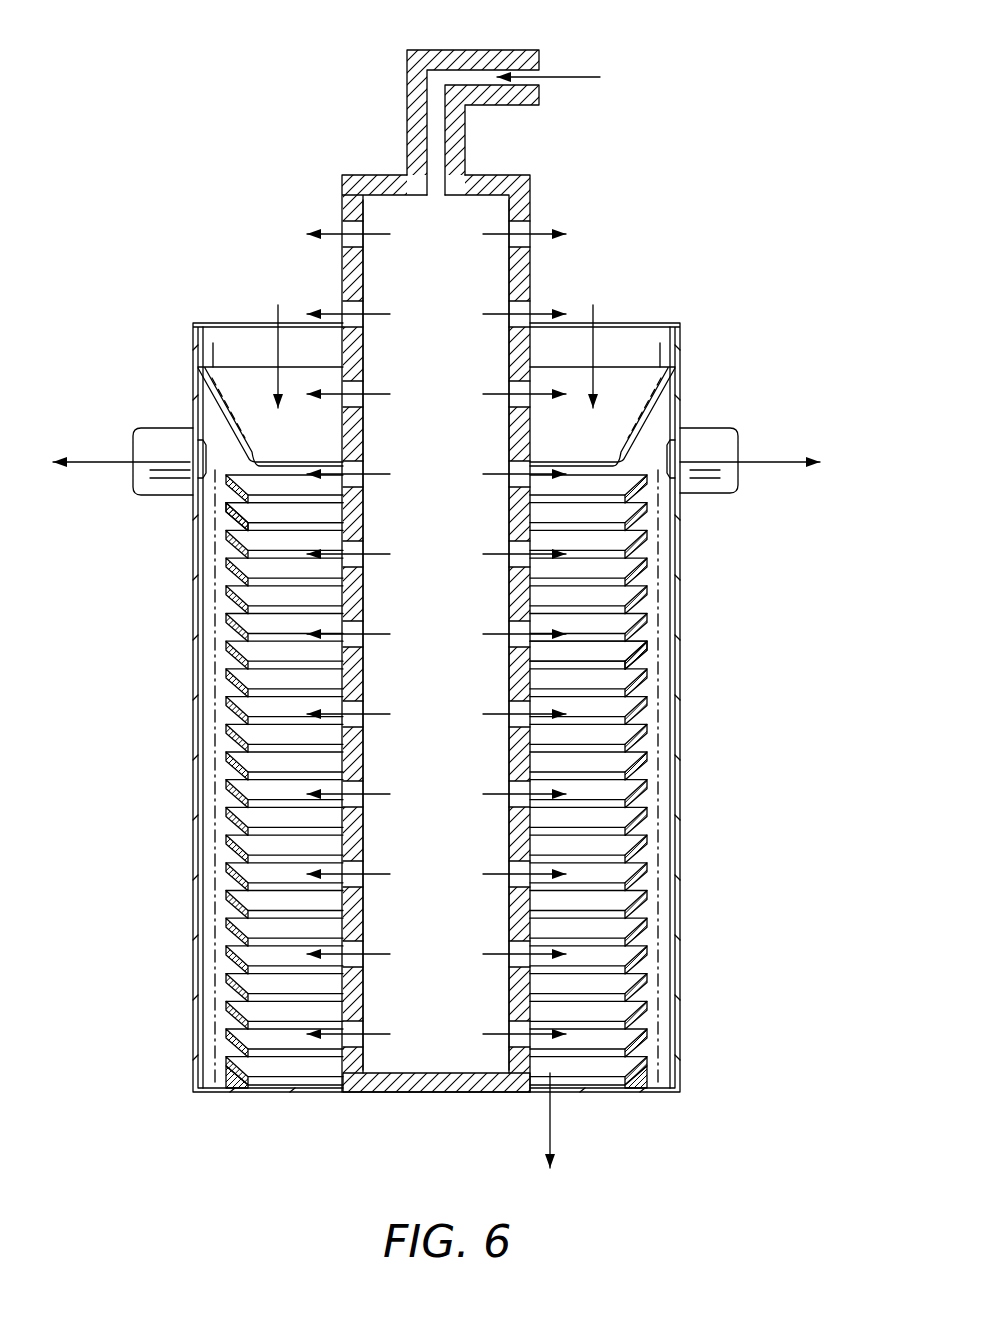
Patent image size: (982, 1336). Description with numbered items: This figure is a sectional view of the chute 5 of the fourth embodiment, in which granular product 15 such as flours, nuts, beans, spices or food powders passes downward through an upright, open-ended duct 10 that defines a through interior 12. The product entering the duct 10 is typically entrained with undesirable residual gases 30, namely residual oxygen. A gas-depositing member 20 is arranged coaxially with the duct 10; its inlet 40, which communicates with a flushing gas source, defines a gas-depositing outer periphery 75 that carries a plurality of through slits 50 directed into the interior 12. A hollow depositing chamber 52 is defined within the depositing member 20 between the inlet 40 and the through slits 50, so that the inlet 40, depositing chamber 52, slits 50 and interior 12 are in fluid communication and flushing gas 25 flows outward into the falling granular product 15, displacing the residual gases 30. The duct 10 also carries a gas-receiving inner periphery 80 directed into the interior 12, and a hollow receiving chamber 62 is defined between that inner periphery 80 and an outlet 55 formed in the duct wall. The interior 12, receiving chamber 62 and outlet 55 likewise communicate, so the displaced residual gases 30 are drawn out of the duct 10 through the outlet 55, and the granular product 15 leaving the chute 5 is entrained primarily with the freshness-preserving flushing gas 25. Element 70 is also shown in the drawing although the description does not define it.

The chute 5 is at (752, 183).
The duct 10 is at (193, 735).
The interior 12 is at (242, 392).
The granular product 15 is at (278, 308).
The gas-depositing member 20 is at (372, 175).
The flushing gas 25 is at (565, 77).
The residual gases 30 is at (112, 462).
The inlet 40 is at (480, 50).
The through slits 50 is at (340, 640).
The depositing chamber 52 is at (432, 718).
The outlet 55 is at (705, 428).
The receiving chamber 62 is at (204, 530).
The fin 70 is at (337, 515).
The outer periphery 75 is at (520, 445).
The inner periphery 80 is at (645, 647).